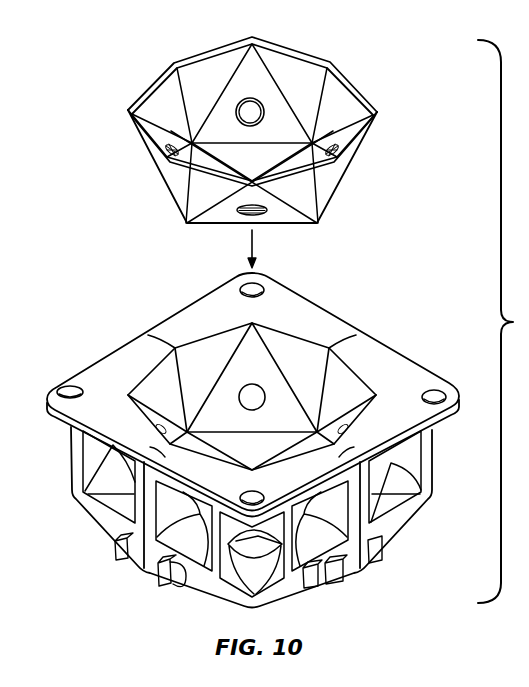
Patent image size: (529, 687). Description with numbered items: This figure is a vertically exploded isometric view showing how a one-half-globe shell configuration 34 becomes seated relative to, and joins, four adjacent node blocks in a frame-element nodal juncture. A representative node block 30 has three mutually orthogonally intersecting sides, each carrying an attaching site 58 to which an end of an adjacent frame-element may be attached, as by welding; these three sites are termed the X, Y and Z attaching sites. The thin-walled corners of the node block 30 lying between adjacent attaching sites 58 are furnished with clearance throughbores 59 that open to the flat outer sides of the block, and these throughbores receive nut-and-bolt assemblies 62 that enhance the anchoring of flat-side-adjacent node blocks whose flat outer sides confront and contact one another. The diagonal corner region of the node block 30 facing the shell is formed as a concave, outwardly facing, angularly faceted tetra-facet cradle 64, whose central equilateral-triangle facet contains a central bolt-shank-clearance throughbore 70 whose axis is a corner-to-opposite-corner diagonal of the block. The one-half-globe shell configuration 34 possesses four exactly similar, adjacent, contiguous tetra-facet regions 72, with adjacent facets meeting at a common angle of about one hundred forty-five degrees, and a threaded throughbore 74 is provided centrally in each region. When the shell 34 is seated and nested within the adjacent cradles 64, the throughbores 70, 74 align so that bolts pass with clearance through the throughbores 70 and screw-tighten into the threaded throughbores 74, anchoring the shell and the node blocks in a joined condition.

The node block 30 is at (163, 302).
The one-half-globe shell configuration 34 is at (218, 129).
The attaching site 58 is at (66, 470).
The clearance throughbore 59 is at (260, 287).
The nut-and-bolt assembly 62 is at (160, 589).
The tetra-facet cradle 64 is at (158, 395).
The bolt-shank-clearance throughbore 70 is at (263, 405).
The tetra-facet region 72 is at (165, 96).
The threaded throughbore 74 is at (255, 120).